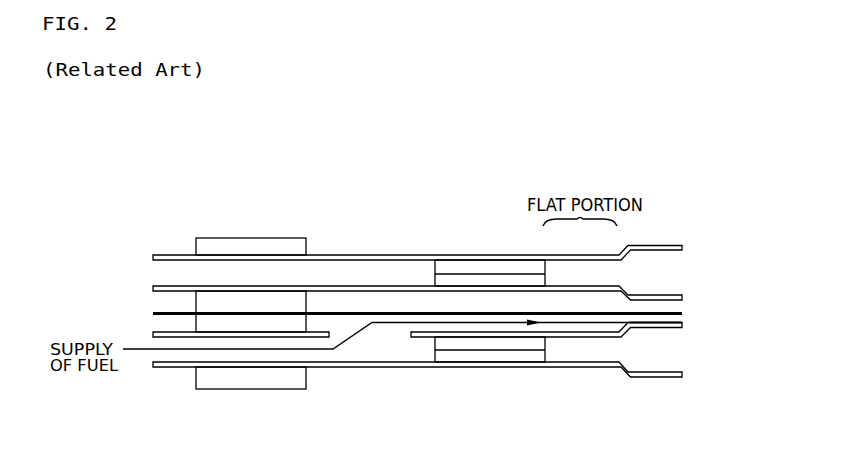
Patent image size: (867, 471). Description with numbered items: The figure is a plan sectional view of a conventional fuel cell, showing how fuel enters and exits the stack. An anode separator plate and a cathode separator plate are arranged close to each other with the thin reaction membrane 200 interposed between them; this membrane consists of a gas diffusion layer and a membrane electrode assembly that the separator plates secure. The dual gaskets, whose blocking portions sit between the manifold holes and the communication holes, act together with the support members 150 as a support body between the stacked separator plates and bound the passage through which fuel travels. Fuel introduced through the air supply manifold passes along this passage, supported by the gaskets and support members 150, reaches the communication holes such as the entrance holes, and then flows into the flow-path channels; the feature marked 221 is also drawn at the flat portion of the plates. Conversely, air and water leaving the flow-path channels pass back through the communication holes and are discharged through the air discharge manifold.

The thin reaction membrane 200 is at (153, 313).
The support member 150 is at (488, 362).
The anode electrode 221 is at (656, 318).